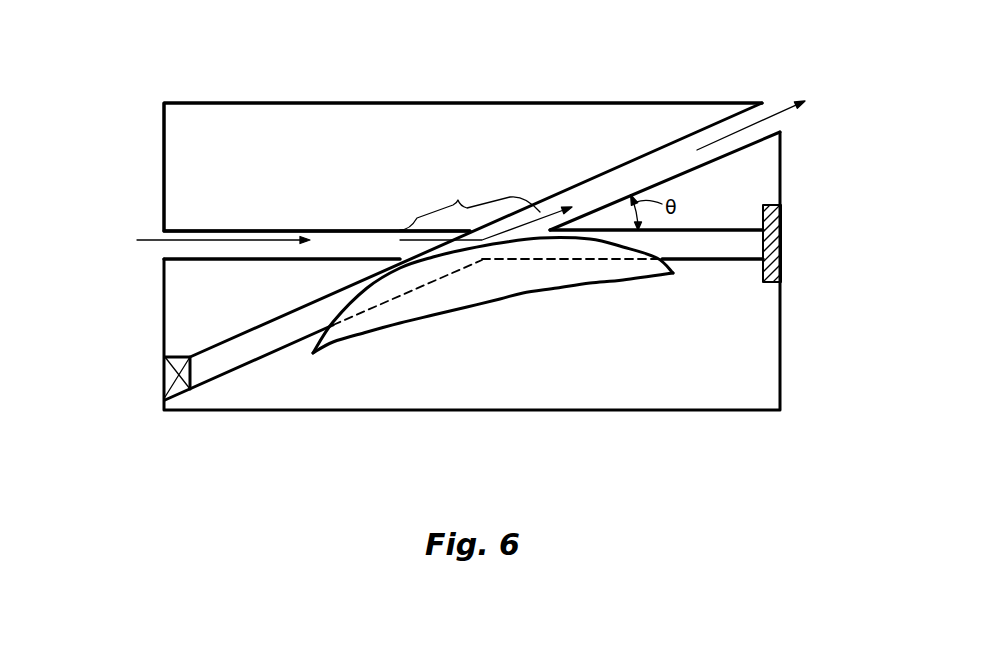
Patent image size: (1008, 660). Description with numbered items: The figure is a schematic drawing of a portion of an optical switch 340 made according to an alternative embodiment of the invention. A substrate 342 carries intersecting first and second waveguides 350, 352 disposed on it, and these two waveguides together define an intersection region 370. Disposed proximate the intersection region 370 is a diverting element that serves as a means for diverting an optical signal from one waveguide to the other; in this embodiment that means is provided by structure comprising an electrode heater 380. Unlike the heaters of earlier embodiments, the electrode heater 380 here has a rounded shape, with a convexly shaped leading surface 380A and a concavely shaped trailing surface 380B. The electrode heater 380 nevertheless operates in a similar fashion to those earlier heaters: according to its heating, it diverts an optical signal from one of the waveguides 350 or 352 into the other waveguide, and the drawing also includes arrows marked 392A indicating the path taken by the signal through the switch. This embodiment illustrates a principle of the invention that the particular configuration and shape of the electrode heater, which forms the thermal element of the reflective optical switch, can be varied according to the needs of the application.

The optical switch 340 is at (118, 125).
The substrate 342 is at (463, 167).
The first waveguide 350 is at (286, 230).
The second waveguide 352 is at (643, 155).
The intersection region 370 is at (470, 205).
The electrode heater 380 is at (501, 314).
The leading surface 380A is at (433, 258).
The trailing surface 380B is at (599, 284).
The fluid flow 392A is at (152, 238).